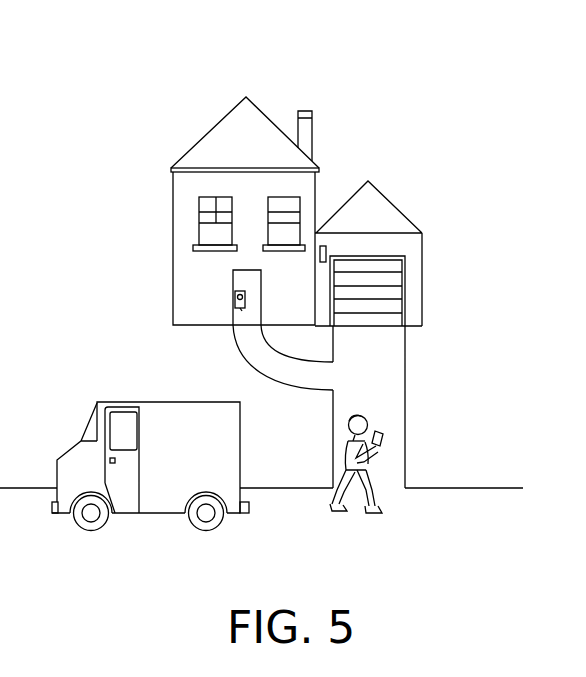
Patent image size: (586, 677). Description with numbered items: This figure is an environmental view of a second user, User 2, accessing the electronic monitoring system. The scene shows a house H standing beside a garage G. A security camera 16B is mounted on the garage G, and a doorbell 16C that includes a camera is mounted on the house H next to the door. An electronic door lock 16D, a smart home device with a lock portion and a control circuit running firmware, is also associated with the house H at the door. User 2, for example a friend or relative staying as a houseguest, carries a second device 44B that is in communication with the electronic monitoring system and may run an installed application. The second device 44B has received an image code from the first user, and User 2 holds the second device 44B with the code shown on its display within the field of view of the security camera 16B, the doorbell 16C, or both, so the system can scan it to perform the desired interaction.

The house H is at (263, 109).
The garage G is at (399, 207).
The security camera 16B is at (326, 253).
The doorbell 16C is at (221, 297).
The electronic door lock 16D is at (242, 311).
The second device 44B is at (390, 431).
The second user User 2 is at (380, 504).